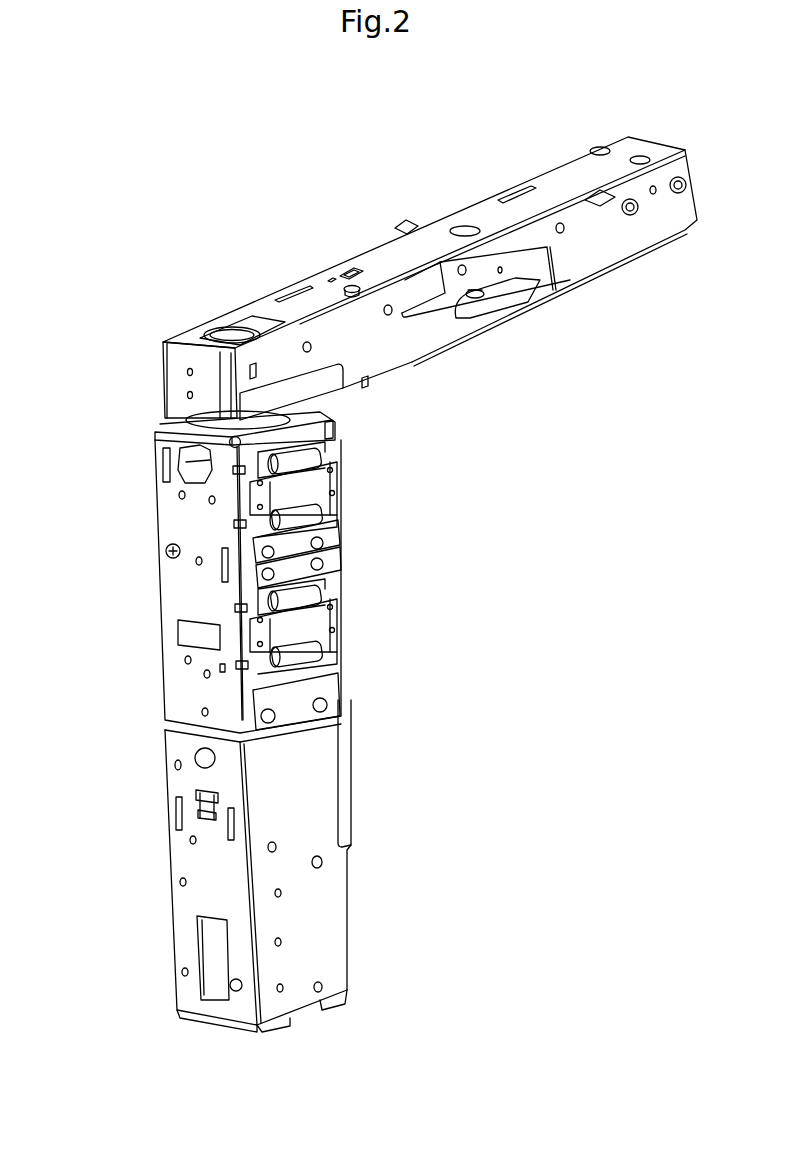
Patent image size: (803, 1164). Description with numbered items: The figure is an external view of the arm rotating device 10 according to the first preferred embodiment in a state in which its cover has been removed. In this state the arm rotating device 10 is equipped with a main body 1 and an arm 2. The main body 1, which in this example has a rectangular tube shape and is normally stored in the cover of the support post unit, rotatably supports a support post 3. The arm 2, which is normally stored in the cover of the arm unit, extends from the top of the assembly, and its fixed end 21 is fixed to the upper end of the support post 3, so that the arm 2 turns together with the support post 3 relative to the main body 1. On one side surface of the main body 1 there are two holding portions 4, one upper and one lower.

The arm rotating device 10 is at (207, 168).
The main body 1 is at (157, 517).
The arm 2 is at (498, 196).
The support post 3 is at (238, 334).
The holding portion 4 is at (362, 480).
The fixed end 21 is at (163, 384).